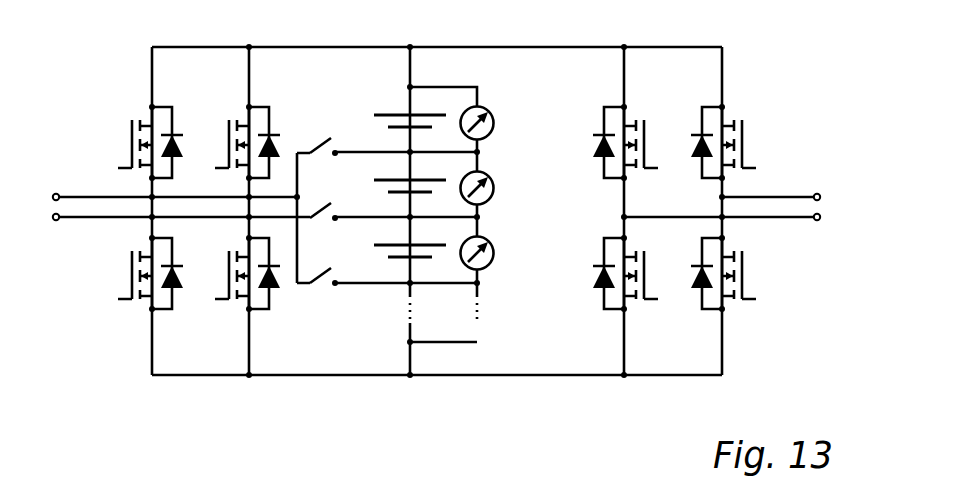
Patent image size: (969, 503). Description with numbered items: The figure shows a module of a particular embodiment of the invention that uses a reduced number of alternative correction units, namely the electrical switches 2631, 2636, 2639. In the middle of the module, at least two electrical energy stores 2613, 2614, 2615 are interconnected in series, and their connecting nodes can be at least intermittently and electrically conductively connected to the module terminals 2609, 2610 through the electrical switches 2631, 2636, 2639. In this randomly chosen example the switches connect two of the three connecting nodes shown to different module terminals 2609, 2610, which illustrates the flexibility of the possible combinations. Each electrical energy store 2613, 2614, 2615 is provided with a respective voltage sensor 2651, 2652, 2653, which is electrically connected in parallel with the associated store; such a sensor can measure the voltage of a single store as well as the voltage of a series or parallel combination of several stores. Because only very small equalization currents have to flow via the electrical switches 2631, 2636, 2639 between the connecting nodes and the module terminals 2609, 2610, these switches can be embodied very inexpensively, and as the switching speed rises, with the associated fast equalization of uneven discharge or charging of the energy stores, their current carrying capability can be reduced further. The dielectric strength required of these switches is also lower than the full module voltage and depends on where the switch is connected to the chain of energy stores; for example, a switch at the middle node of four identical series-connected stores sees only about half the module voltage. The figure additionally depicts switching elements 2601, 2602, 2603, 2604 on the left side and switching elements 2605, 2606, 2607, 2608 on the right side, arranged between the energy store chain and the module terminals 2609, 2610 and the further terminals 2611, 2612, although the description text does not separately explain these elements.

The transistor 2601 is at (128, 122).
The transistor 2602 is at (128, 287).
The transistor 2603 is at (222, 120).
The transistor 2604 is at (222, 277).
The transistor 2605 is at (652, 120).
The transistor 2606 is at (652, 277).
The transistor 2607 is at (747, 123).
The transistor 2608 is at (747, 287).
The module terminal 2609 is at (68, 193).
The module terminal 2610 is at (72, 219).
The terminal 2611 is at (808, 193).
The terminal 2612 is at (802, 222).
The electrical energy store 2613 is at (371, 119).
The electrical energy store 2614 is at (371, 184).
The electrical energy store 2615 is at (371, 250).
The electrical switch 2631 is at (317, 143).
The electrical switch 2636 is at (320, 207).
The electrical switch 2639 is at (325, 287).
The voltage sensor 2651 is at (500, 123).
The voltage sensor 2652 is at (500, 188).
The voltage sensor 2653 is at (500, 253).